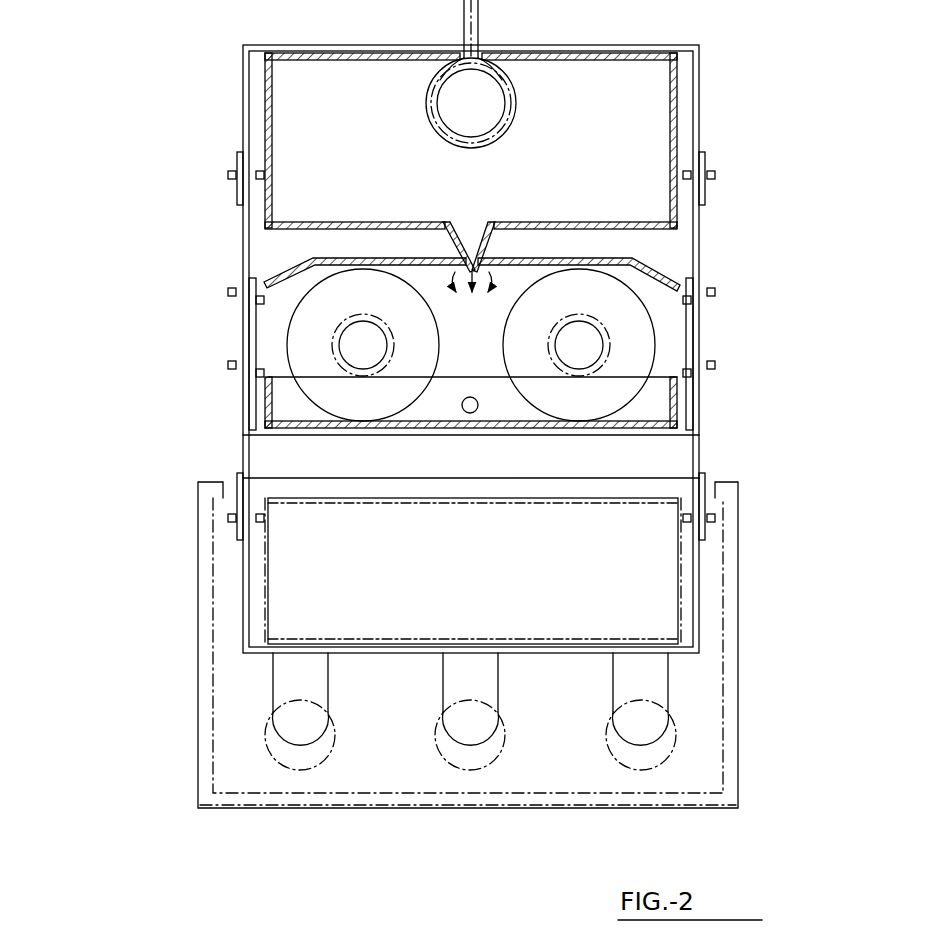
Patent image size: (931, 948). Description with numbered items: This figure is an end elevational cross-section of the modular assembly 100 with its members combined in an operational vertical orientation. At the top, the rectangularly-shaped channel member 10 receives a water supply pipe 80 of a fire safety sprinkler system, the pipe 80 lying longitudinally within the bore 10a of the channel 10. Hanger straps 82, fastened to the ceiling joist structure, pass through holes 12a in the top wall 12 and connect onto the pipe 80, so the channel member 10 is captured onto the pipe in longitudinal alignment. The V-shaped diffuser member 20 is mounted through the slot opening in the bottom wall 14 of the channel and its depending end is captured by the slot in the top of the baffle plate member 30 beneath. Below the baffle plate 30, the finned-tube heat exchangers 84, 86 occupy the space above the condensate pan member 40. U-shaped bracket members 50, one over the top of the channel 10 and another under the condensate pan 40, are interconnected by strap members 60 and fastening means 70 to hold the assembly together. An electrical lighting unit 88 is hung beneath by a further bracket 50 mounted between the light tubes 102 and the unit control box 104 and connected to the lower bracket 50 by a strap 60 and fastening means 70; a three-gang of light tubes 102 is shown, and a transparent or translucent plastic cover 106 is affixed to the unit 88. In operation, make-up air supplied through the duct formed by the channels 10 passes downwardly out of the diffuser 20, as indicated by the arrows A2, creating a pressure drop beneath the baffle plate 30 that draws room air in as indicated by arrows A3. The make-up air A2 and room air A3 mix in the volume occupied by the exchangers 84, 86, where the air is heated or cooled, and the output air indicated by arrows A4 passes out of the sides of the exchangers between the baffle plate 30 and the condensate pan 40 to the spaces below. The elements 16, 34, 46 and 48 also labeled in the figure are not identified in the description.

The modular assembly 100 is at (210, 104).
The channel member 10 is at (528, 114).
The bore 10a is at (345, 76).
The top wall 12 is at (600, 52).
The holes 12a is at (490, 56).
The bottom wall 14 is at (370, 222).
The side walls 16 is at (273, 140).
The diffuser member 20 is at (474, 216).
The baffle plate member 30 is at (471, 251).
The deflector plates 34 is at (276, 272).
The condensate pan member 40 is at (471, 403).
The tray wall 46 is at (270, 408).
The drain hole 48 is at (472, 414).
The bracket member 50 is at (668, 46).
The strap member 60 is at (243, 215).
The fastening means 70 is at (228, 176).
The water supply pipe 80 is at (508, 74).
The hanger strap 82 is at (462, 12).
The heat exchanger 84 is at (285, 344).
The heat exchanger 86 is at (657, 342).
The electrical lighting unit 88 is at (196, 656).
The light tubes 102 is at (272, 742).
The unit control box 104 is at (495, 595).
The plastic cover 106 is at (342, 800).
The make-up air arrows A2 is at (471, 214).
The room air arrows A3 is at (398, 240).
The output air arrows A4 is at (278, 312).